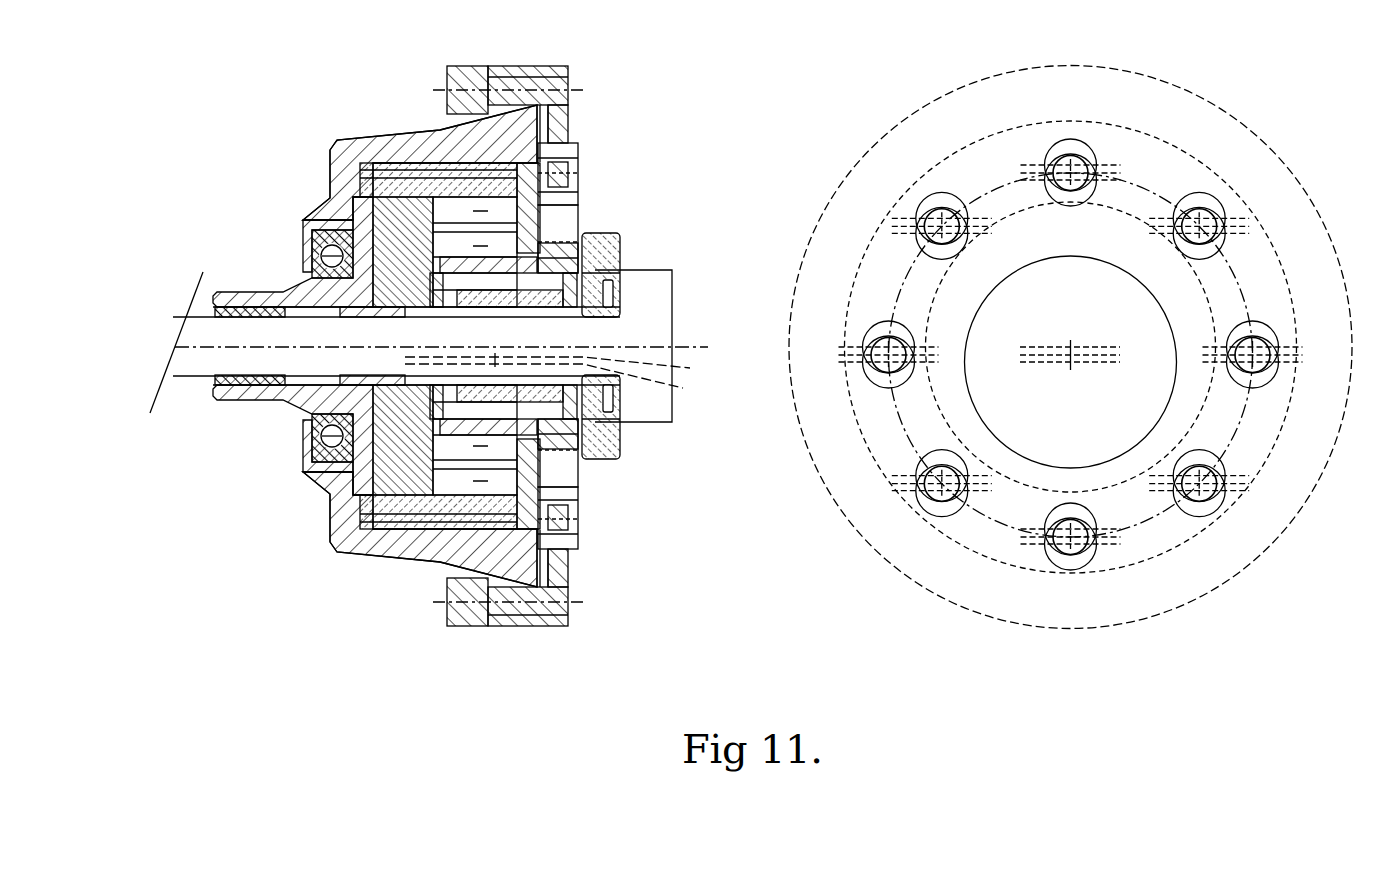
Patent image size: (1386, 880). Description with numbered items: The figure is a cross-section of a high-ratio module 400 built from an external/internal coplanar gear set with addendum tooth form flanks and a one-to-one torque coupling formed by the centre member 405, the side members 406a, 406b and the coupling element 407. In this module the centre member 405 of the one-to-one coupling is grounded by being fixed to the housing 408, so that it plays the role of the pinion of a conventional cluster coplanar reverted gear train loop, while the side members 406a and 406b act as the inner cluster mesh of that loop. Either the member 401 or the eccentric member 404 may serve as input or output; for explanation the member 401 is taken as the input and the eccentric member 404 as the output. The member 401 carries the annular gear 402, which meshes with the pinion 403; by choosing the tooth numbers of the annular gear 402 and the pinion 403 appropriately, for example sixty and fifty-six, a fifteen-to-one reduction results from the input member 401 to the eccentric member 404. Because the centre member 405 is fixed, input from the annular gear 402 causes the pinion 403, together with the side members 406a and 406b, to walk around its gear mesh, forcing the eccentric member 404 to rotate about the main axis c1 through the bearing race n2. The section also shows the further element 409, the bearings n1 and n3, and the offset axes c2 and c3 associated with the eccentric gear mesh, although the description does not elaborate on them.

The high-ratio module 400 is at (258, 130).
The member 401 is at (307, 288).
The annular gear 402 is at (380, 147).
The pinion 403 is at (357, 160).
The eccentric member 404 is at (622, 266).
The centre member 405 is at (995, 88).
The side member 406a is at (575, 145).
The side member 406b is at (992, 165).
The one-to-one torque coupling element 407 is at (923, 207).
The housing 408 is at (455, 128).
The wheel rim 409 is at (657, 295).
The coil winding n1 is at (590, 285).
The bearing race n2 is at (328, 202).
The stator n3 is at (417, 140).
The main axis c1 is at (647, 354).
The second axis c2 is at (762, 380).
The third axis c3 is at (774, 361).